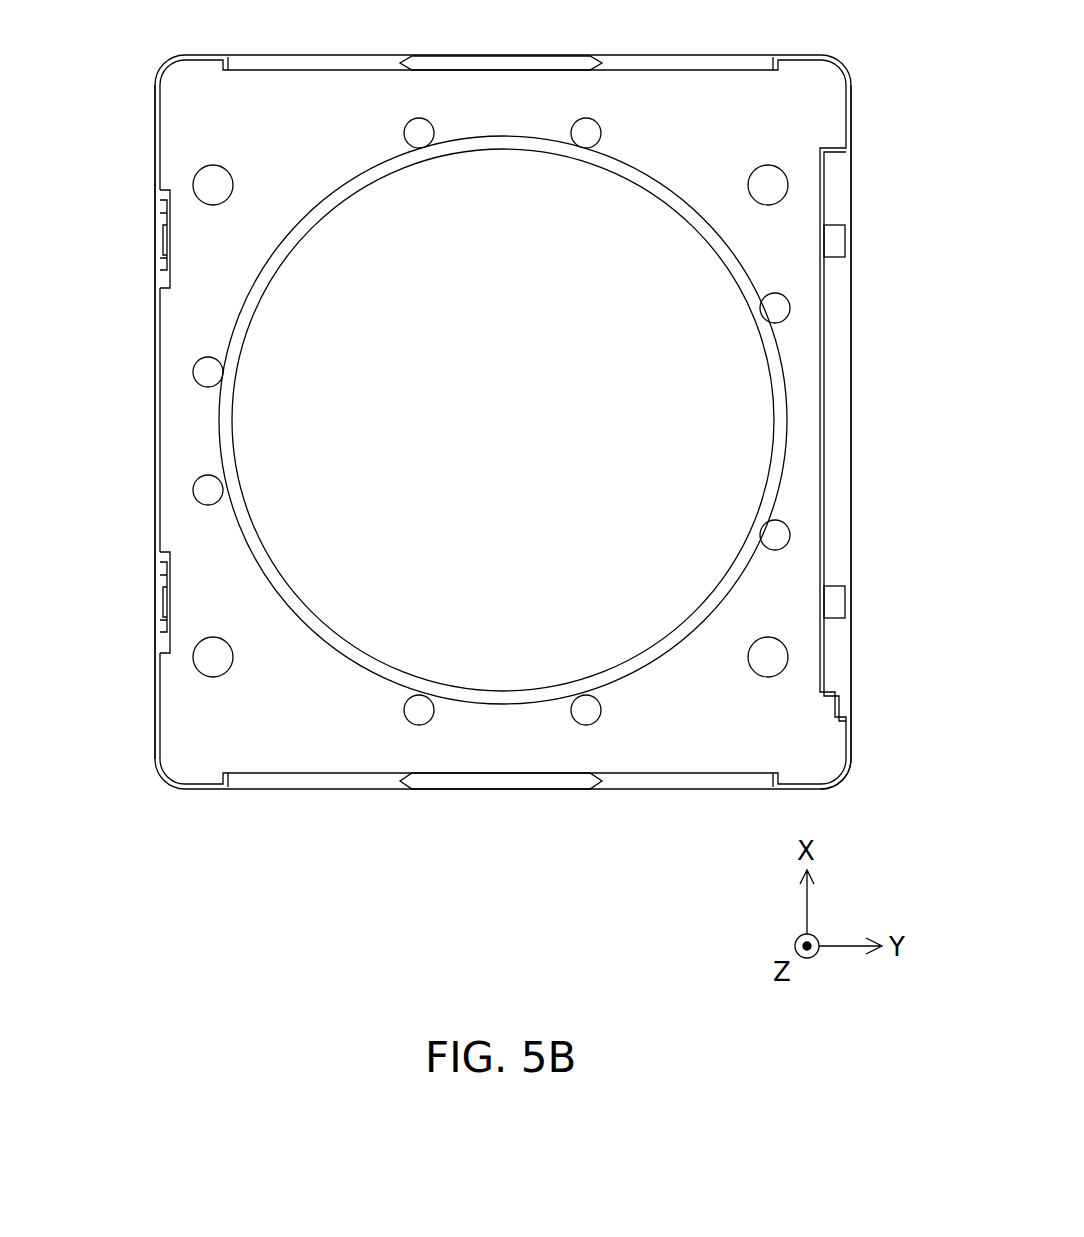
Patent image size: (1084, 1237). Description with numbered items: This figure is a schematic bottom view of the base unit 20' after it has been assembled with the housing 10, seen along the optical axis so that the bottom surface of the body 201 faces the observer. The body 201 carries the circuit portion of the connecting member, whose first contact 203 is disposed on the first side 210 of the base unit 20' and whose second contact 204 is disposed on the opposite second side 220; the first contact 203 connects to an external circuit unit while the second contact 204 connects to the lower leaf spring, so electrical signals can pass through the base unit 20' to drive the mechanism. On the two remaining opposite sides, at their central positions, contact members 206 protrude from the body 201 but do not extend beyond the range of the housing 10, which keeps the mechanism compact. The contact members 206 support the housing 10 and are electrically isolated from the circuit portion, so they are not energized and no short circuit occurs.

The housing 10 is at (262, 65).
The base unit 20' is at (538, 422).
The body 201 is at (820, 748).
The first contact 203 is at (835, 240).
The second contact 204 is at (165, 240).
The contact members 206 is at (441, 62).
The first side 210 is at (820, 490).
The second side 220 is at (172, 412).